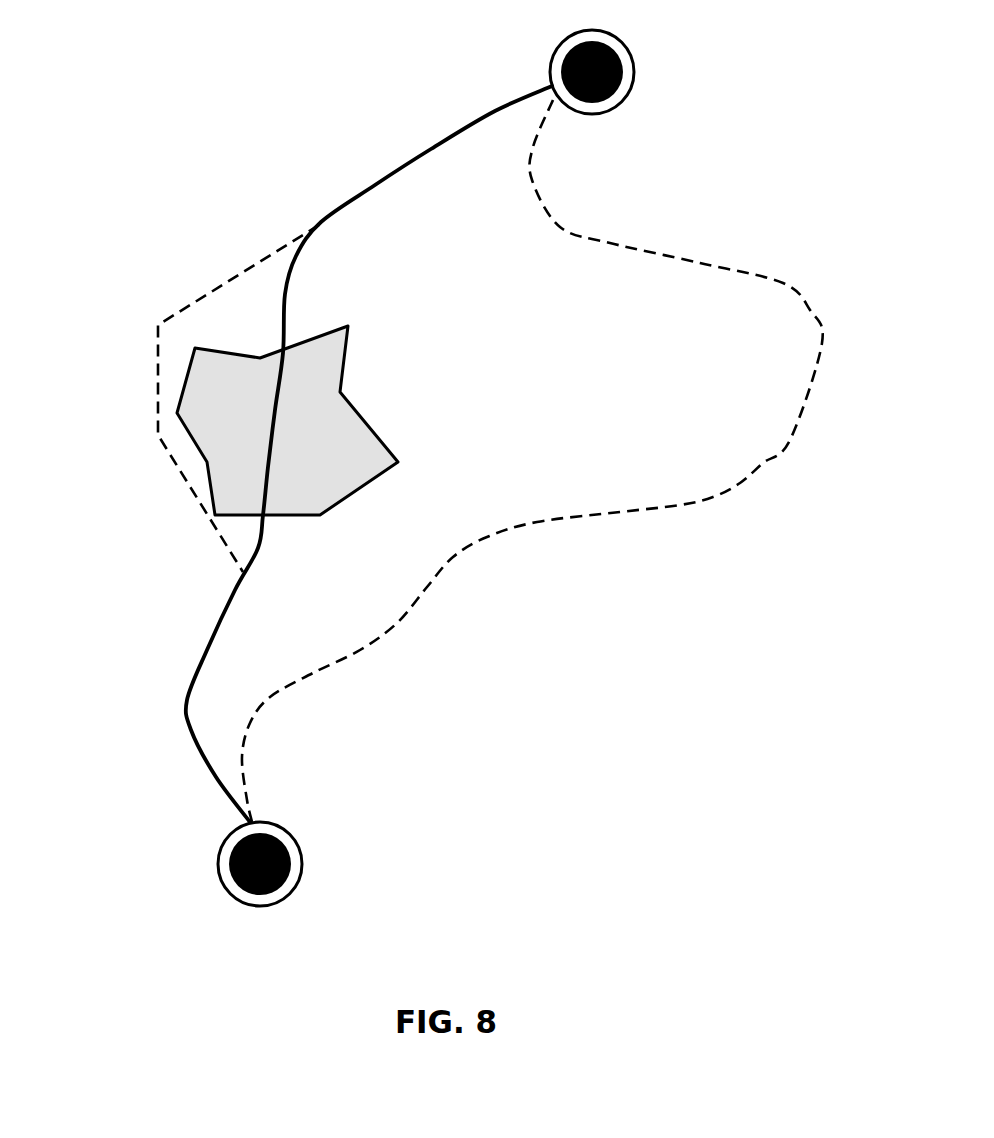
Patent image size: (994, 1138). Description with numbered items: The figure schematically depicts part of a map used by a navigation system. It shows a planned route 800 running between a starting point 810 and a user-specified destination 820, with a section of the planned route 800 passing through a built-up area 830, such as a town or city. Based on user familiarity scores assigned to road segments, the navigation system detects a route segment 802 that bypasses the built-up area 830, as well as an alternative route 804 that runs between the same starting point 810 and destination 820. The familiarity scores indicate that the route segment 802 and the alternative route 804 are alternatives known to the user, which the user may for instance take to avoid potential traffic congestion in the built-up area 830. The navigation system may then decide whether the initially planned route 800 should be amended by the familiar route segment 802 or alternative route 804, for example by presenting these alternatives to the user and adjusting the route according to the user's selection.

The planned route 800 is at (257, 552).
The route segment 802 is at (158, 323).
The alternative route 804 is at (790, 440).
The starting point 810 is at (302, 860).
The destination 820 is at (635, 77).
The built-up area 830 is at (400, 460).